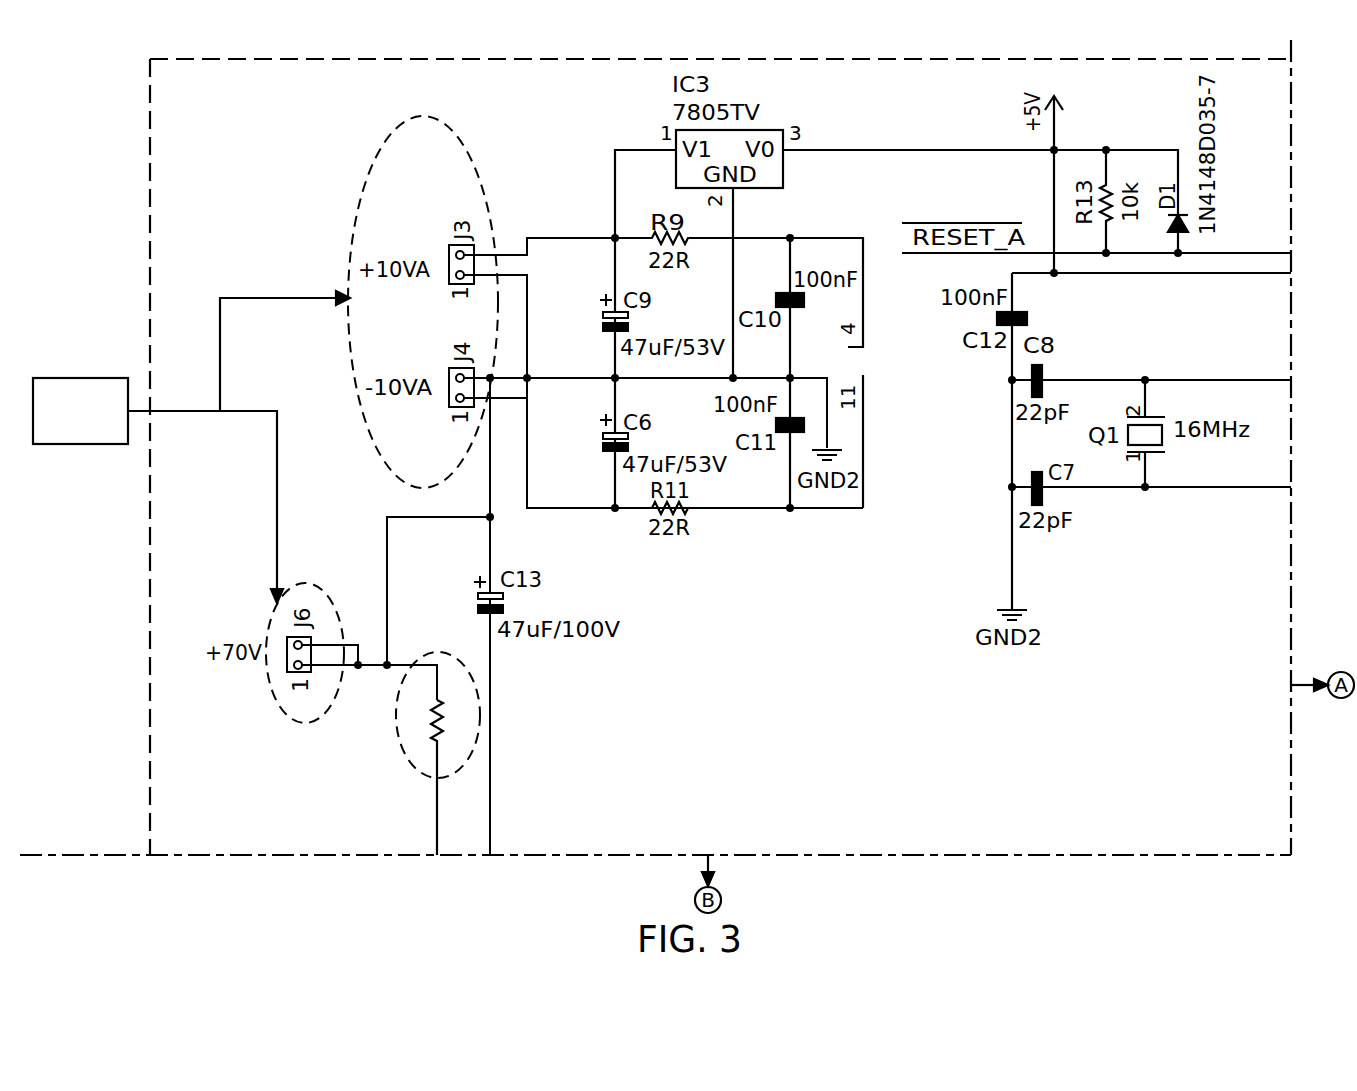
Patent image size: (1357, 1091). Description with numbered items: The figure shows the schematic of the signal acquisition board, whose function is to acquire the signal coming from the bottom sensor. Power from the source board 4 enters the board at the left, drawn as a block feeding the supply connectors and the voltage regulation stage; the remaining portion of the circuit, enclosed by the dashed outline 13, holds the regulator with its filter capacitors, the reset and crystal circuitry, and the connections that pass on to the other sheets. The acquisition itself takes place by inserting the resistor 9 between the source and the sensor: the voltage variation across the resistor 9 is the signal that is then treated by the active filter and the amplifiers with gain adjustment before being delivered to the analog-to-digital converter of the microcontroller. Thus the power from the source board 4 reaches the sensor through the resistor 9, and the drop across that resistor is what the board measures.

The power supply / control board 13 is at (150, 190).
The power from the source board 4 is at (82, 378).
The resistor R10 9 is at (396, 723).